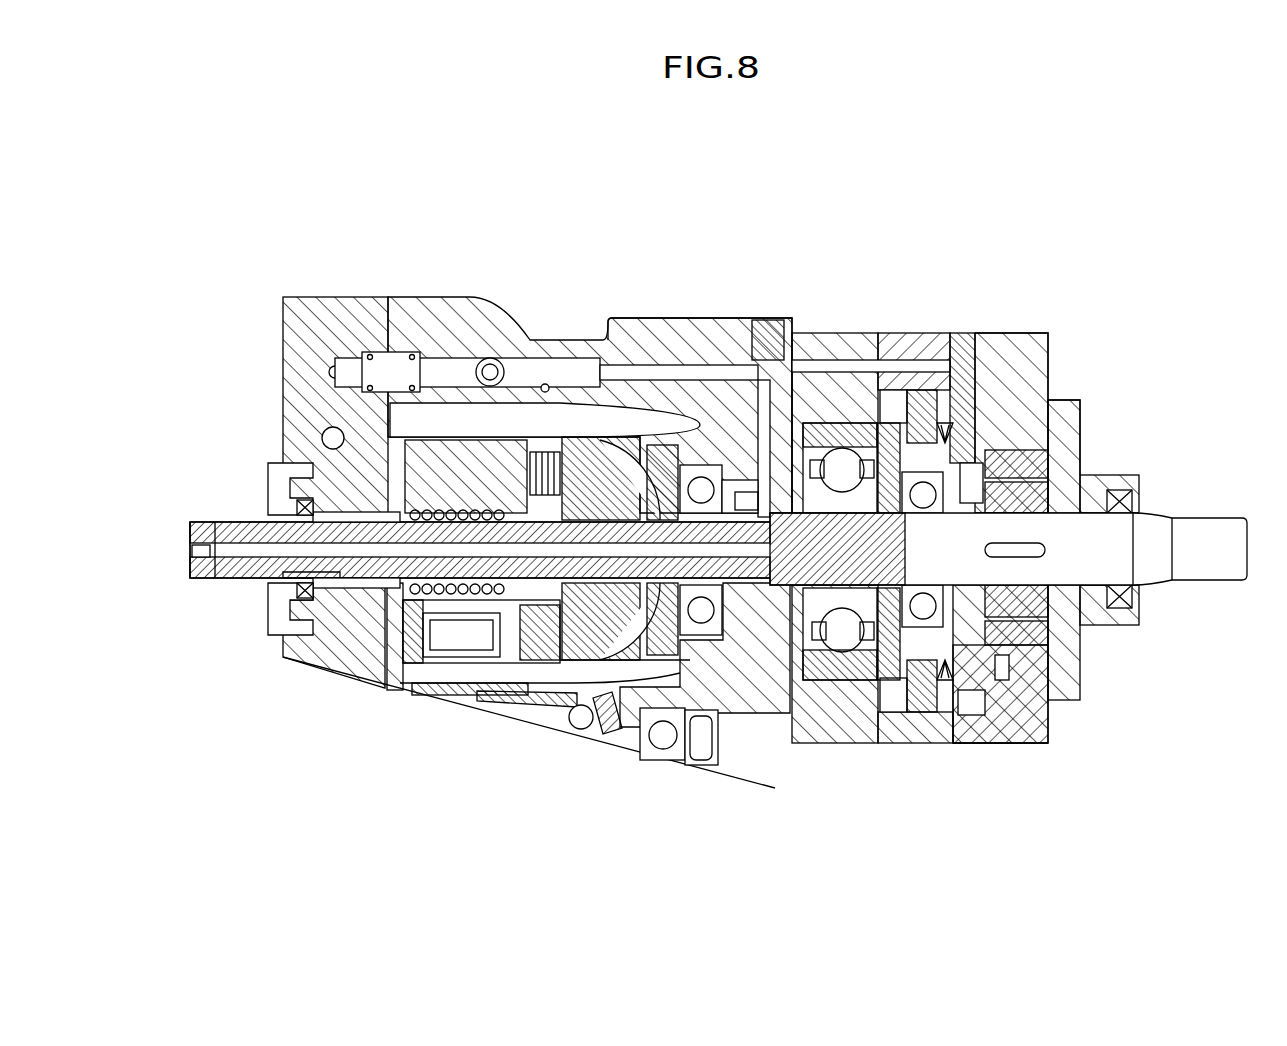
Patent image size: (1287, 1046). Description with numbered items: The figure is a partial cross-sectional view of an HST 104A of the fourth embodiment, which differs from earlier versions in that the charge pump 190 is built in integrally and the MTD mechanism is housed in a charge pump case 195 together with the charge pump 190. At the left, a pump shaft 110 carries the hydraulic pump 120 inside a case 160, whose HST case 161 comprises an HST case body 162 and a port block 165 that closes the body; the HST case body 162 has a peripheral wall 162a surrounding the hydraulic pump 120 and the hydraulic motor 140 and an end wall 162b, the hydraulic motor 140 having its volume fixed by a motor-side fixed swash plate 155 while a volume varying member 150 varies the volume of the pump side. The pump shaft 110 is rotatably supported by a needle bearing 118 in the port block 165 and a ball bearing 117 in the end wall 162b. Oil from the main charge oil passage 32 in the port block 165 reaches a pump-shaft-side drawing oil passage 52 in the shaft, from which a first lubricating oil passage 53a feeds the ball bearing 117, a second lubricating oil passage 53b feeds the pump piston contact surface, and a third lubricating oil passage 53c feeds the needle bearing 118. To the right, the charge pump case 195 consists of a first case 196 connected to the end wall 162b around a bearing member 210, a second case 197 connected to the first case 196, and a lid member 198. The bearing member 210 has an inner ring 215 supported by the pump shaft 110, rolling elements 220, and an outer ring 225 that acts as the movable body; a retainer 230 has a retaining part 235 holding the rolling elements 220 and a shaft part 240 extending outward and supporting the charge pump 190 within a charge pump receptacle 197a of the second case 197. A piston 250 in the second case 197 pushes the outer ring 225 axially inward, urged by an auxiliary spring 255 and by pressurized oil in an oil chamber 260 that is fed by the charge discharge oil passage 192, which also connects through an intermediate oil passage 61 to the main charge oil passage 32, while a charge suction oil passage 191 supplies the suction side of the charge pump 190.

The main charge oil passage 32 is at (335, 372).
The pump-shaft-side drawing oil passage 52 is at (192, 572).
The first lubricating oil passage 53a is at (743, 482).
The second lubricating oil passage 53b is at (403, 600).
The third lubricating oil passage 53c is at (290, 578).
The intermediate oil passage 61 is at (698, 372).
The HST 104A is at (697, 519).
The pump shaft 110 is at (215, 520).
The ball bearing 117 is at (718, 765).
The needle bearing 118 is at (298, 477).
The hydraulic pump 120 is at (519, 430).
The hydraulic motor 140 is at (498, 706).
The volume varying member 150 is at (594, 431).
The motor-side fixed swash plate 155 is at (598, 735).
The case 160 is at (537, 494).
The HST case 161 is at (537, 497).
The HST case body 162 is at (589, 517).
The peripheral wall 162a is at (647, 335).
The end wall 162b is at (738, 690).
The port block 165 is at (354, 288).
The charge pump 190 is at (1083, 468).
The charge suction oil passage 191 is at (1009, 668).
The charge discharge oil passage 192 is at (978, 470).
The charge pump case 195 is at (967, 488).
The first case 196 is at (835, 345).
The second case 197 is at (1018, 440).
The charge pump receptacle 197a is at (1060, 400).
The lid member 198 is at (1080, 410).
The bearing member 210 is at (869, 652).
The inner ring 215 is at (802, 617).
The rolling elements 220 is at (847, 647).
The outer ring 225 is at (853, 660).
The retainer 230 is at (1044, 618).
The retaining part 235 is at (937, 700).
The shaft part 240 is at (1105, 565).
The piston 250 is at (953, 745).
The auxiliary spring 255 is at (985, 702).
The oil chamber 260 is at (1003, 745).